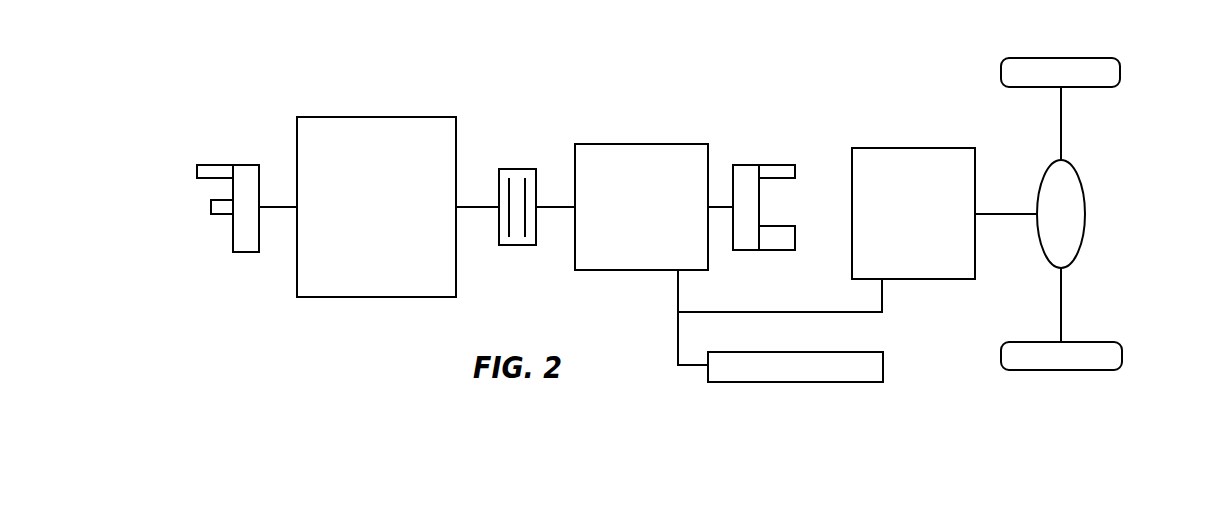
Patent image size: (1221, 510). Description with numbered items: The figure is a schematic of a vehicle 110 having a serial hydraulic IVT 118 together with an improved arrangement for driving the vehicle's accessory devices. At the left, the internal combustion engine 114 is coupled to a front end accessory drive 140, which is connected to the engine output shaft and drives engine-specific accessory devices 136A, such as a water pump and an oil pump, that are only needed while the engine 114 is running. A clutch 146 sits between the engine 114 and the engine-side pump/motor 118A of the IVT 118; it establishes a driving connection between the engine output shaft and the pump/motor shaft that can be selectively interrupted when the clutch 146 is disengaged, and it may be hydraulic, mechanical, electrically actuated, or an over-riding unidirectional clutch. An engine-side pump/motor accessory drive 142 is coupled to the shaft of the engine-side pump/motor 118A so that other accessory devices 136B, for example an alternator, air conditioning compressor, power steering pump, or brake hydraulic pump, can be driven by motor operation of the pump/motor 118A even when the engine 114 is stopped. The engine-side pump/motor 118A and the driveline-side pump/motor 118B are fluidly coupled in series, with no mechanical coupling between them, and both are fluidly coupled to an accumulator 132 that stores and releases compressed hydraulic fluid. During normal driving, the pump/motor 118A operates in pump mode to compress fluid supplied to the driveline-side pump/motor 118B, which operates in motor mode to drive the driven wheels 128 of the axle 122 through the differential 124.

The vehicle 110 is at (263, 70).
The internal combustion engine 114 is at (383, 128).
The serial hydraulic IVT 118 is at (598, 106).
The engine-side pump/motor 118A is at (652, 157).
The driveline-side pump/motor 118B is at (917, 158).
The axle 122 is at (1062, 122).
The differential 124 is at (1077, 208).
The driven wheel 128 is at (1113, 72).
The accumulator 132 is at (879, 368).
The accessory devices 136A is at (211, 209).
The accessory devices 136B is at (797, 237).
The front end accessory drive 140 is at (238, 267).
The engine-side pump/motor accessory drive 142 is at (748, 149).
The clutch 146 is at (518, 247).